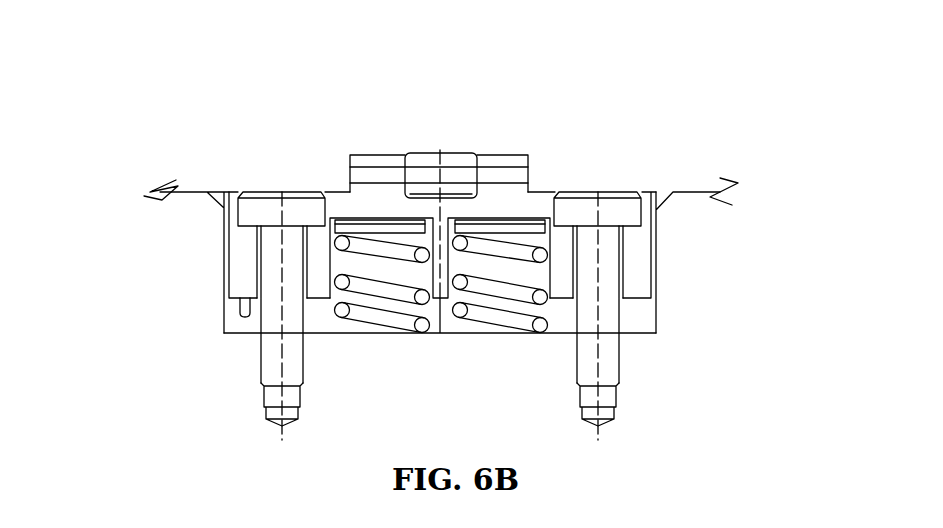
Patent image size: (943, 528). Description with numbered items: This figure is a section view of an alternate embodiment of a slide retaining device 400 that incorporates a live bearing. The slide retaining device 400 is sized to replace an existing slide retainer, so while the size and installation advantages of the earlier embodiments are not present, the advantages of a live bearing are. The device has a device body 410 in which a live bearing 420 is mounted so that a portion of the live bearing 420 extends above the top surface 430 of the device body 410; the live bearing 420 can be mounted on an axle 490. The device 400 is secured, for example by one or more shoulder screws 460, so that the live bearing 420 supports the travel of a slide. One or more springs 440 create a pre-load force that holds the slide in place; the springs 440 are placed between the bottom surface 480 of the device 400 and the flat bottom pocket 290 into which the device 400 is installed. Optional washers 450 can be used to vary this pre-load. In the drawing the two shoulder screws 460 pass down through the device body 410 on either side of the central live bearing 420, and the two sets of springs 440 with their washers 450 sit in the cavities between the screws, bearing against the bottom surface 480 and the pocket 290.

The slide retaining device 400 is at (126, 134).
The device body 410 is at (233, 273).
The flat bottom pocket 290 is at (658, 313).
The top surface 430 is at (336, 192).
The axle 490 is at (388, 177).
The live bearing 420 is at (450, 153).
The washers 450 is at (513, 228).
The springs 440 is at (402, 322).
The shoulder screws 460 is at (260, 363).
The bottom surface 480 is at (223, 323).